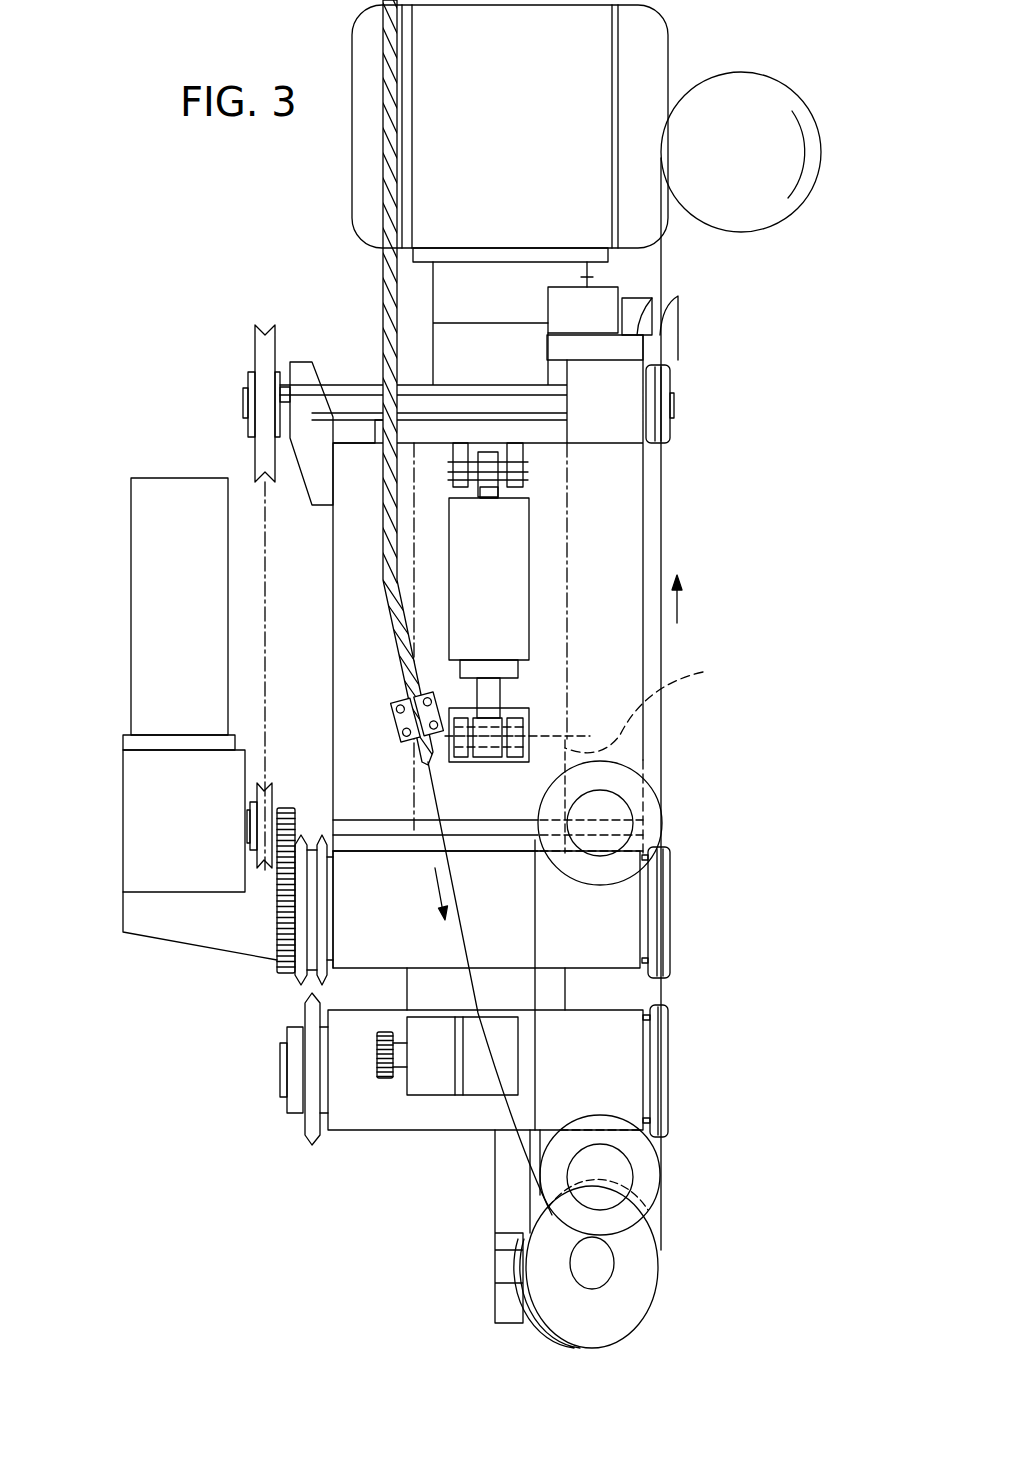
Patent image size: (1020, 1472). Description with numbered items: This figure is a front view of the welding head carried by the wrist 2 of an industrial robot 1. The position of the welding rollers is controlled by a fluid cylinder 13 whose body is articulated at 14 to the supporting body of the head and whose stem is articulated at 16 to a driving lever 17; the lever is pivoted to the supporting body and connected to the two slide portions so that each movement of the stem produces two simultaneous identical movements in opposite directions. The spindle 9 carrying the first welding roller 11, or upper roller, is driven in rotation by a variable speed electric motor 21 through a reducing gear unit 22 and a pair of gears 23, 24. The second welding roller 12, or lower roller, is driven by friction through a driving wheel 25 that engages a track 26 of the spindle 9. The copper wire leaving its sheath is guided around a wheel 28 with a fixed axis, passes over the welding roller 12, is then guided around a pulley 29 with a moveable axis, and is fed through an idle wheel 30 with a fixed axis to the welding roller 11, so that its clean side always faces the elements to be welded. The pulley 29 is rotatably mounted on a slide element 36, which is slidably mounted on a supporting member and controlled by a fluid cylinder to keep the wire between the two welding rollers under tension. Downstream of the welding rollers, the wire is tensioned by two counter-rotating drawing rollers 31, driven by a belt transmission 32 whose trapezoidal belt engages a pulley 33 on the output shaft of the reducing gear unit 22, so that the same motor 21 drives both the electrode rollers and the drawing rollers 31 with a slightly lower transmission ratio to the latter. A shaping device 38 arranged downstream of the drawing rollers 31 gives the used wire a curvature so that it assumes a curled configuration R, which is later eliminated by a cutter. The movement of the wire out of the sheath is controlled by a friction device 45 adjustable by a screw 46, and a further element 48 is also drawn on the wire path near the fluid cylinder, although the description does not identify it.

The industrial robot 1 is at (690, 70).
The curled configuration R is at (822, 150).
The wrist 2 is at (600, 282).
The shaping device 38 is at (688, 311).
The drawing rollers 31 is at (667, 383).
The articulation of the fluid cylinder body 14 is at (407, 470).
The variable speed electric motor 21 is at (148, 557).
The belt transmission 32 is at (272, 610).
The fluid cylinder 13 is at (517, 537).
The clamp 48 is at (398, 704).
The articulation of the stem 16 is at (651, 707).
The driving lever 17 is at (497, 738).
The pulley 33 is at (277, 790).
The gear 23 is at (283, 815).
The idle wheel 30 is at (622, 780).
The reducing gear unit 22 is at (130, 810).
The first welding roller 11 is at (655, 877).
The spindle 9 is at (615, 937).
The gear 24 is at (283, 898).
The track 26 is at (310, 940).
The driving wheel 25 is at (310, 1043).
The second welding roller 12 is at (622, 1068).
The screw 46 is at (377, 1062).
The friction device 45 is at (432, 1102).
The wheel 28 is at (647, 1155).
The slide element 36 is at (505, 1260).
The pulley 29 is at (647, 1268).